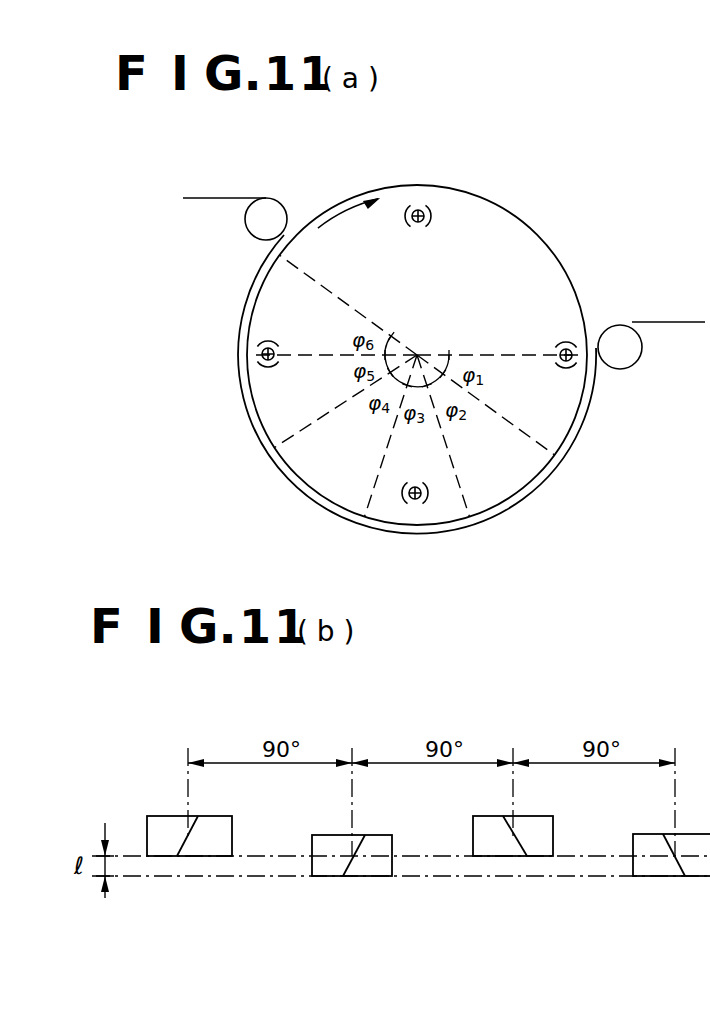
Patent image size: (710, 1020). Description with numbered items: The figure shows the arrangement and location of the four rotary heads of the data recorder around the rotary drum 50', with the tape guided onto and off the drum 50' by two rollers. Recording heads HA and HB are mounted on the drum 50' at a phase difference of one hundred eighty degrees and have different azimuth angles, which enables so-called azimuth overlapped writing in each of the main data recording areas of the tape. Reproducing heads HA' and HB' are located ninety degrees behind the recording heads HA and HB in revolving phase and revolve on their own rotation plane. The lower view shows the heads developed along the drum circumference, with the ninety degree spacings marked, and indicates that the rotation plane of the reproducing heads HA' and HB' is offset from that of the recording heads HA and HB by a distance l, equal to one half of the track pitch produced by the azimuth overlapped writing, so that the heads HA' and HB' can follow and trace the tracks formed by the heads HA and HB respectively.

The drum 50' is at (430, 355).
The recording head HA is at (479, 202).
The recording head HB is at (431, 536).
The reproducing head HA' is at (238, 396).
The reproducing head HB' is at (592, 315).